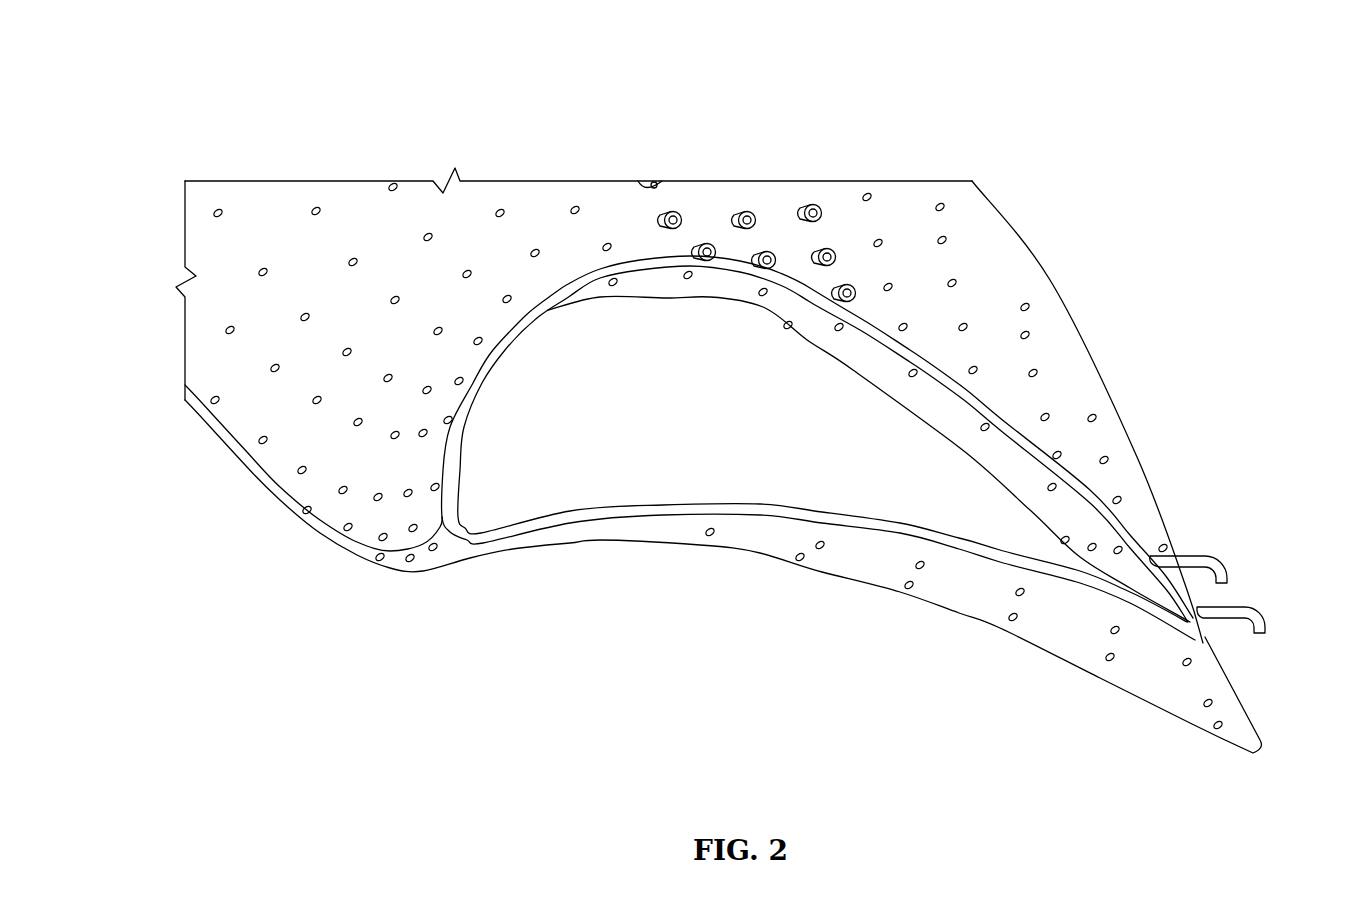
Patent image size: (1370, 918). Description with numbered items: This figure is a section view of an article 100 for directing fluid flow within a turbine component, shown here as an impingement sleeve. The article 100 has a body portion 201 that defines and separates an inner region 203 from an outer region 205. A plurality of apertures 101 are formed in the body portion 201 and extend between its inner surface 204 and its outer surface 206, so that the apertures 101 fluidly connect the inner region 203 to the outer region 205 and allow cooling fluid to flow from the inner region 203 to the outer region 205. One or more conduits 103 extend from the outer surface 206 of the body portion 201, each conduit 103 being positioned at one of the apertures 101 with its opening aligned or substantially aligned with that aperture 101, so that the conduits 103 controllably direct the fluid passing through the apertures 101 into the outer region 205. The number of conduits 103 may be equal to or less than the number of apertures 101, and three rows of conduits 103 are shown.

The article 100 is at (333, 131).
The apertures 101 is at (393, 188).
The conduits 103 is at (827, 240).
The body portion 201 is at (490, 193).
The inner region 203 is at (702, 414).
The inner surface 204 is at (643, 277).
The outer region 205 is at (702, 681).
The outer surface 206 is at (228, 373).